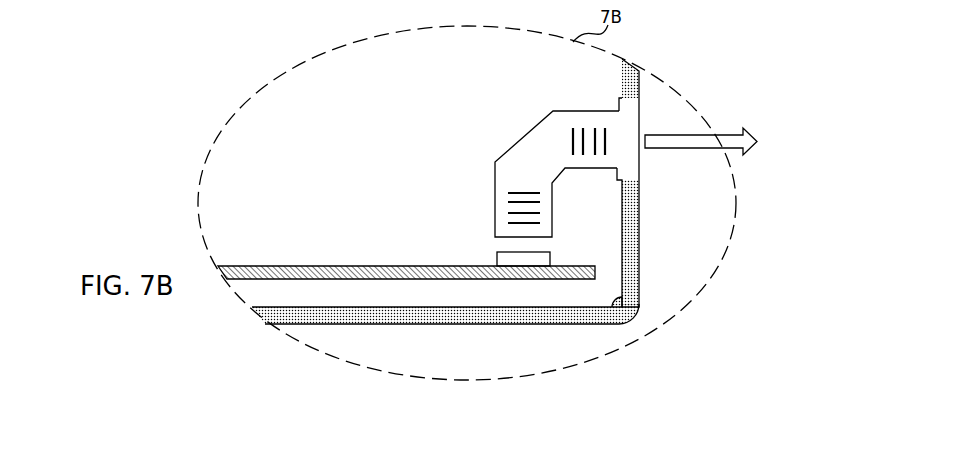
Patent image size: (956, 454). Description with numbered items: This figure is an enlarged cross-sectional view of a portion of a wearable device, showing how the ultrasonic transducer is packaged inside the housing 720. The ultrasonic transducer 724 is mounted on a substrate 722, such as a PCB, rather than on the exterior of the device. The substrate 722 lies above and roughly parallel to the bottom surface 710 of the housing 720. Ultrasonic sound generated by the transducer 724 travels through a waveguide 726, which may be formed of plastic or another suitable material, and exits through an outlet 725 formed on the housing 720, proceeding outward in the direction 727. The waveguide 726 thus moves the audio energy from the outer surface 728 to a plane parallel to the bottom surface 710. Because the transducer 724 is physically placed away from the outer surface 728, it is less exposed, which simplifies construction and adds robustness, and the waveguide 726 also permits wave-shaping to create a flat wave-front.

The bottom surface 710 is at (474, 242).
The housing 720 is at (310, 324).
The substrate 722 is at (354, 266).
The ultrasonic transducer 724 is at (495, 262).
The outlet 725 is at (640, 118).
The waveguide 726 is at (512, 146).
The direction 727 is at (733, 133).
The outer surface 728 is at (640, 225).